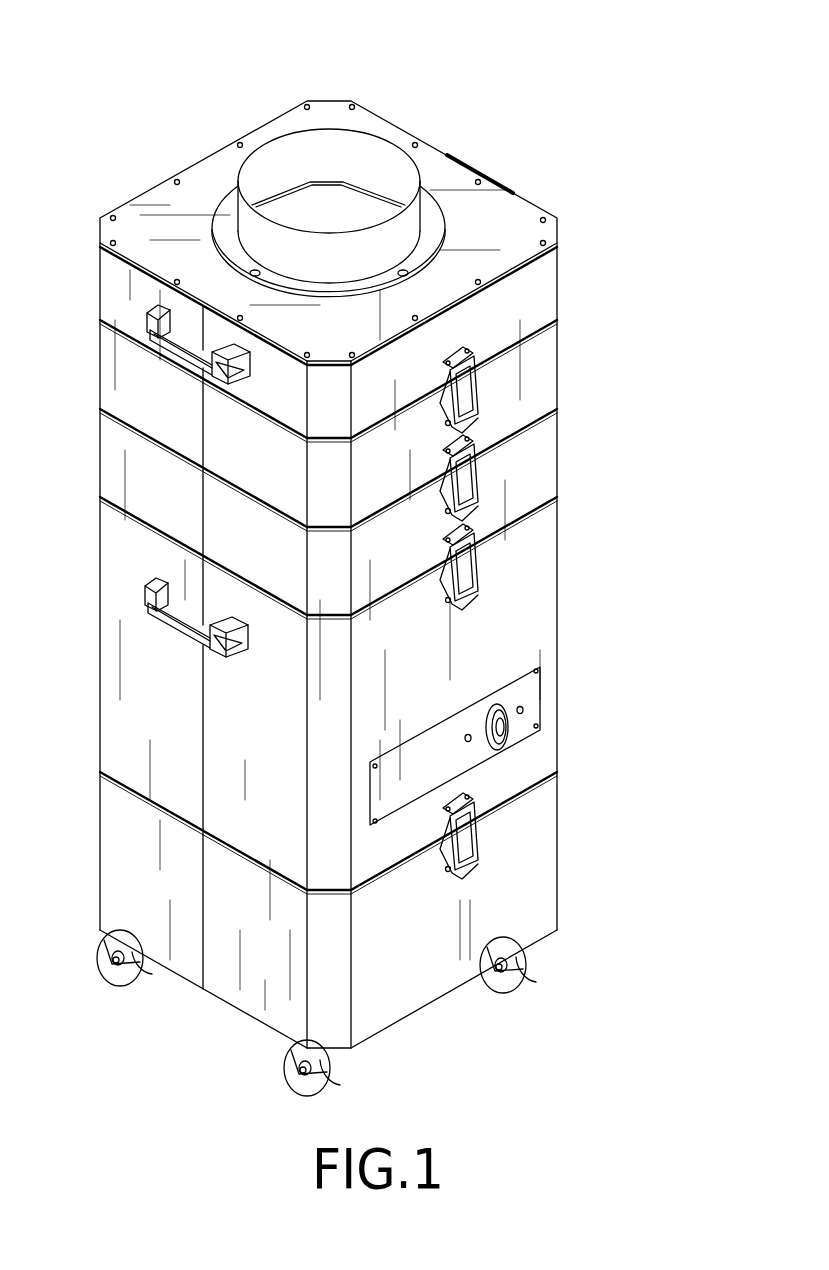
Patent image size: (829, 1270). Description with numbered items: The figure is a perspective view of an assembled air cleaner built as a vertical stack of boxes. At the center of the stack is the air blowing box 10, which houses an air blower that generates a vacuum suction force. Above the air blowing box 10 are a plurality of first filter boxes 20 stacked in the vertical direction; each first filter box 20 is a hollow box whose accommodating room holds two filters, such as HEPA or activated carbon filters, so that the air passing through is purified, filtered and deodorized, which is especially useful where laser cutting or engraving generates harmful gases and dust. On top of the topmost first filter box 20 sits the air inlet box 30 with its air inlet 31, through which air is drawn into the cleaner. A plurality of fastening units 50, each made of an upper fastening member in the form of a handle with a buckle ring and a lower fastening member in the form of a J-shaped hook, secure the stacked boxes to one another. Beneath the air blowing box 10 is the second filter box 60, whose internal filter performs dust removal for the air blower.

The air blowing box 10 is at (578, 684).
The first filter box 20 is at (576, 346).
The air inlet box 30 is at (540, 193).
The air inlet 31 is at (383, 167).
The fastening unit 50 is at (496, 385).
The second filter box 60 is at (578, 873).